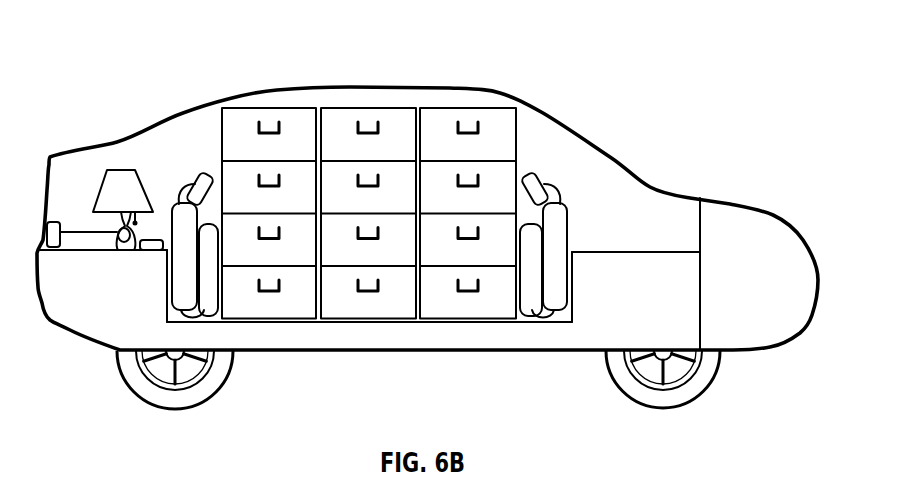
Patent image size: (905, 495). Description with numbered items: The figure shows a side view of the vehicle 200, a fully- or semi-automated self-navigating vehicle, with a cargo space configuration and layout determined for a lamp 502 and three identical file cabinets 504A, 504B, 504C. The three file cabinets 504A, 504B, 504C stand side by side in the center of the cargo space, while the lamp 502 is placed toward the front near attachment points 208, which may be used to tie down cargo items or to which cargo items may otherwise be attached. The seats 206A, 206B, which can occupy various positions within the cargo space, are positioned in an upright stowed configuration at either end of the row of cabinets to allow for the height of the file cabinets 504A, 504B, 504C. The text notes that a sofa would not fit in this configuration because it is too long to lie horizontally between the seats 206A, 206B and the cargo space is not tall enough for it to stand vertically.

The vehicle 200 is at (646, 69).
The lamp 502 is at (132, 168).
The attachment points 208 is at (53, 249).
The seat 206A is at (182, 287).
The seat 206B is at (553, 287).
The file cabinet 504A is at (262, 107).
The file cabinet 504B is at (373, 107).
The file cabinet 504C is at (483, 107).